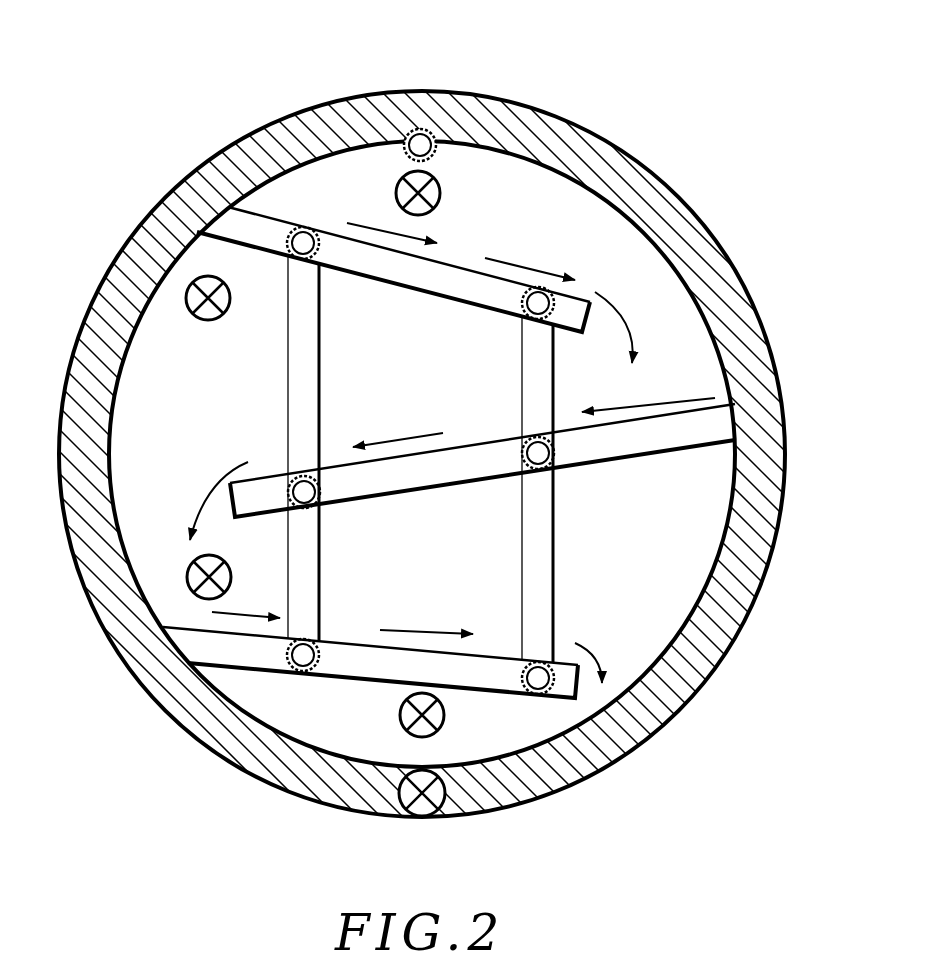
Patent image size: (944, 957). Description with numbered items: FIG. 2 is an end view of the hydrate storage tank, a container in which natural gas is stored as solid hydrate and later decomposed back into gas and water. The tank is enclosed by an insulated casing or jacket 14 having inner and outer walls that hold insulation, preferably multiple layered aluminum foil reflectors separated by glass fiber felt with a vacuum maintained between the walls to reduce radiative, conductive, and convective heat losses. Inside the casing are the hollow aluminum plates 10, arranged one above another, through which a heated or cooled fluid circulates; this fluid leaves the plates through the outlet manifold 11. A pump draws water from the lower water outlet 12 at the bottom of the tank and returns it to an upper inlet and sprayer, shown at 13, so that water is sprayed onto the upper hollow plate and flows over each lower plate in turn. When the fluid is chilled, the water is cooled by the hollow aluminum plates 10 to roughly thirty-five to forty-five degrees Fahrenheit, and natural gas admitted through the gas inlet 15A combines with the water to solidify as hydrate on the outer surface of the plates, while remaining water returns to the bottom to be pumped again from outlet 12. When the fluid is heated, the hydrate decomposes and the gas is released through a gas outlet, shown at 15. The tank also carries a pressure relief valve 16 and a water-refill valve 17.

The hollow aluminum plate 10 is at (637, 448).
The outlet manifold 11 is at (320, 366).
The lower water outlet 12 is at (395, 812).
The top bearing ball 13 is at (423, 135).
The insulated casing or jacket 14 is at (777, 455).
The port 15 is at (208, 320).
The gas inlet 15A is at (398, 713).
The pressure relief valve 16 is at (188, 570).
The water-refill valve 17 is at (440, 193).